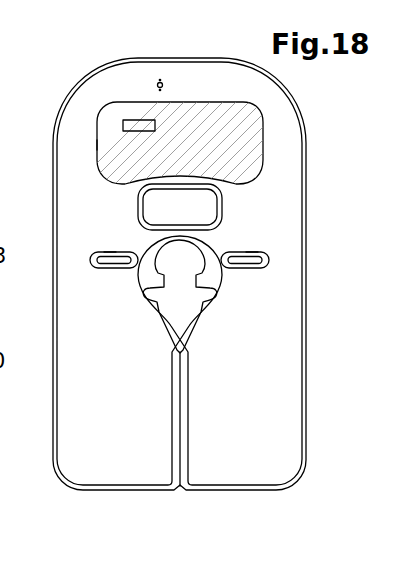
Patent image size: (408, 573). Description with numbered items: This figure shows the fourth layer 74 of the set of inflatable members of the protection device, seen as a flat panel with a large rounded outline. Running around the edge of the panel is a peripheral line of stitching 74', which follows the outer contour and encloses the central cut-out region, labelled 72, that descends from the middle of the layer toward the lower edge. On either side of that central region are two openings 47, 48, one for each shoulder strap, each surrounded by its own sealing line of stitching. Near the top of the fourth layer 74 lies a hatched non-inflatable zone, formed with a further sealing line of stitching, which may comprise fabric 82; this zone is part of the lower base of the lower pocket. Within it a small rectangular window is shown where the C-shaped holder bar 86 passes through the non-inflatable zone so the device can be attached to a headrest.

The keyhole-shaped opening 72 is at (163, 176).
The fourth layer 74 is at (206, 274).
The peripheral line of stitching 74' is at (202, 274).
The fabric 82 is at (113, 128).
The C-shaped holder bar 86 is at (142, 125).
The opening 48 is at (111, 295).
The opening 47 is at (245, 304).